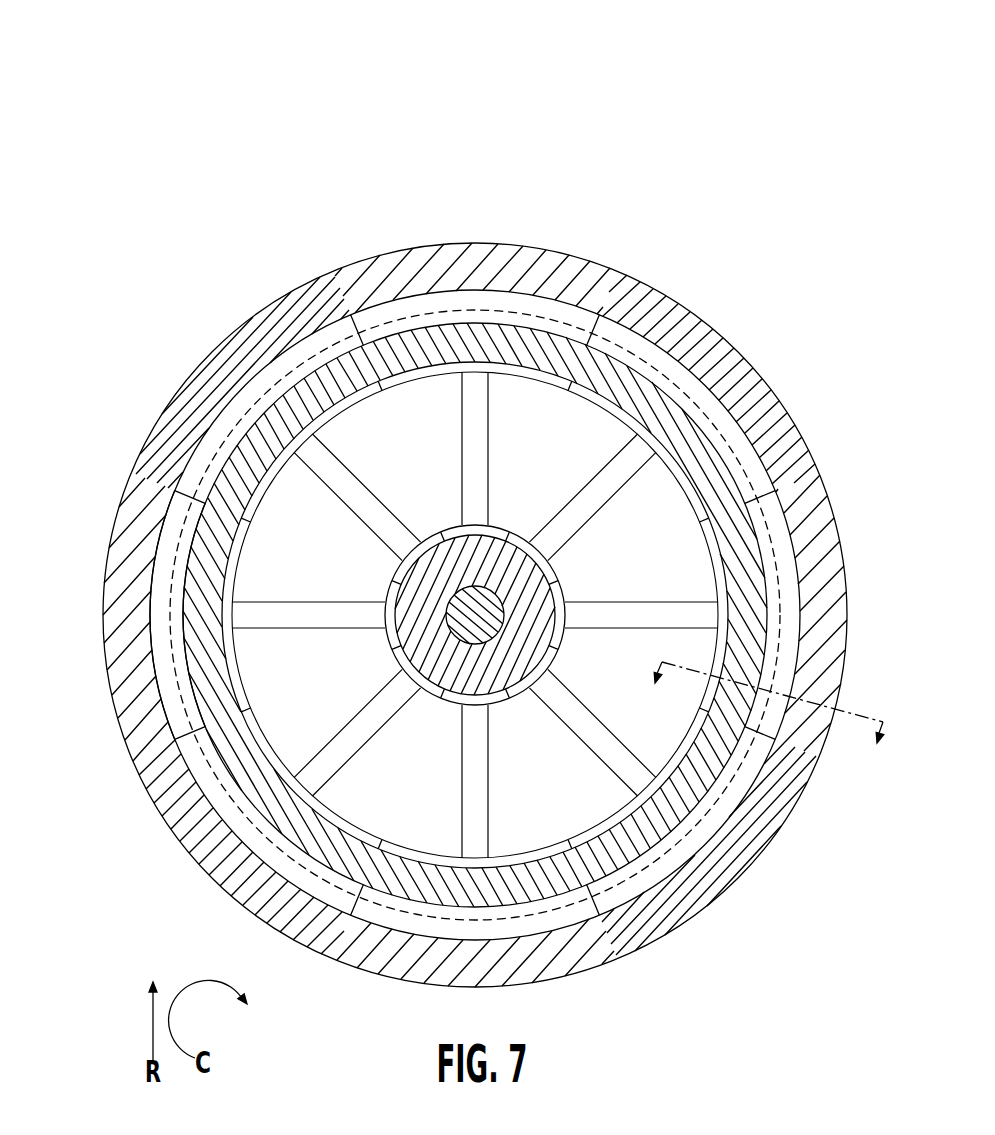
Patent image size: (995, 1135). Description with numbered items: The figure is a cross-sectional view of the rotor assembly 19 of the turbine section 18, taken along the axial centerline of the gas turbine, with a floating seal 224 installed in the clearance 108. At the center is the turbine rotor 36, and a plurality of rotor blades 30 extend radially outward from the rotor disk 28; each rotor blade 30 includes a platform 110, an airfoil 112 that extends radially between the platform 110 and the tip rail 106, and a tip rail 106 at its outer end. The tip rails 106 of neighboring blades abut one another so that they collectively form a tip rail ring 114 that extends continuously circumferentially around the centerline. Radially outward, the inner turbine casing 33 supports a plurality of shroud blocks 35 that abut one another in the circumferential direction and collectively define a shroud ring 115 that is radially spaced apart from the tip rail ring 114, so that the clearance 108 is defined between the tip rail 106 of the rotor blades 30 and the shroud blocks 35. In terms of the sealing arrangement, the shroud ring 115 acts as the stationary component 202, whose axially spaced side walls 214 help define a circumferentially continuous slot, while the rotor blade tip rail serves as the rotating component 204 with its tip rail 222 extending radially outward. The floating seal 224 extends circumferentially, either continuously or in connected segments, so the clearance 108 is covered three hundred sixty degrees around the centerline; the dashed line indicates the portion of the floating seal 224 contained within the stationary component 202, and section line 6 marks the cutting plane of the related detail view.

The rotor assembly 19 is at (138, 72).
The turbine section 18 is at (135, 228).
The inner turbine casing 33 is at (650, 292).
The shroud blocks 35 is at (402, 315).
The clearance 108 is at (490, 320).
The floating seal 224 is at (247, 453).
The side walls 214 is at (157, 580).
The stationary component 202 is at (167, 690).
The tip rail 222 is at (233, 688).
The tip rail 106 is at (347, 400).
The rotor blades 30 is at (370, 493).
The rotating component 204 is at (488, 772).
The airfoil 112 is at (460, 447).
The platform 110 is at (403, 580).
The rotor disk 28 is at (502, 553).
The turbine rotor 36 is at (482, 620).
The tip rail ring 114 is at (342, 818).
The section line 6- 6 is at (763, 728).
The shroud ring 115 is at (736, 810).